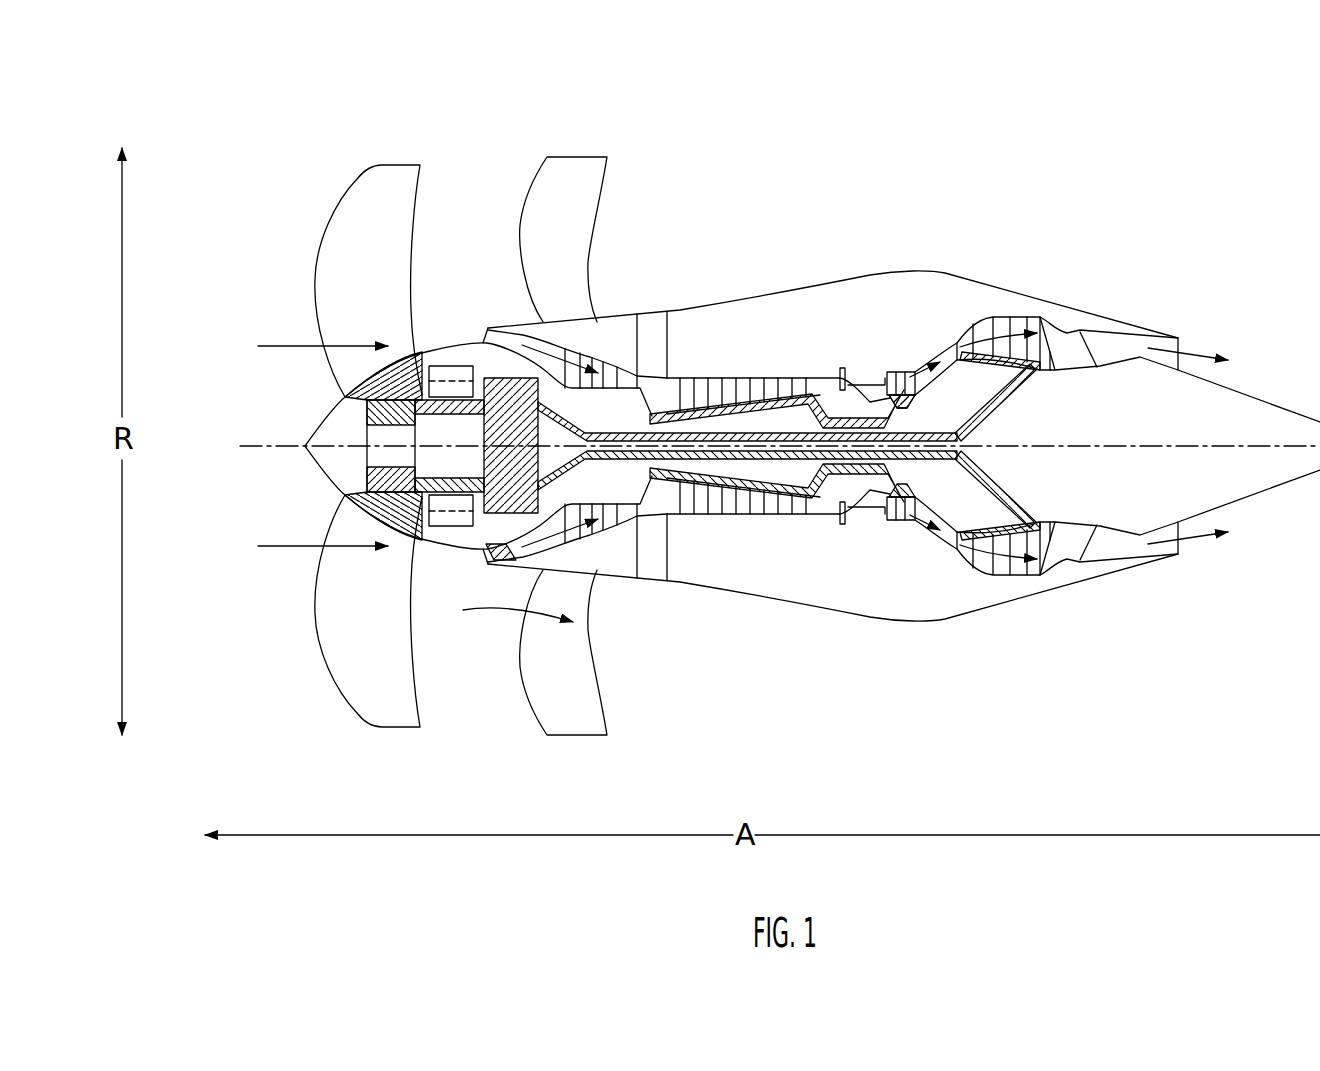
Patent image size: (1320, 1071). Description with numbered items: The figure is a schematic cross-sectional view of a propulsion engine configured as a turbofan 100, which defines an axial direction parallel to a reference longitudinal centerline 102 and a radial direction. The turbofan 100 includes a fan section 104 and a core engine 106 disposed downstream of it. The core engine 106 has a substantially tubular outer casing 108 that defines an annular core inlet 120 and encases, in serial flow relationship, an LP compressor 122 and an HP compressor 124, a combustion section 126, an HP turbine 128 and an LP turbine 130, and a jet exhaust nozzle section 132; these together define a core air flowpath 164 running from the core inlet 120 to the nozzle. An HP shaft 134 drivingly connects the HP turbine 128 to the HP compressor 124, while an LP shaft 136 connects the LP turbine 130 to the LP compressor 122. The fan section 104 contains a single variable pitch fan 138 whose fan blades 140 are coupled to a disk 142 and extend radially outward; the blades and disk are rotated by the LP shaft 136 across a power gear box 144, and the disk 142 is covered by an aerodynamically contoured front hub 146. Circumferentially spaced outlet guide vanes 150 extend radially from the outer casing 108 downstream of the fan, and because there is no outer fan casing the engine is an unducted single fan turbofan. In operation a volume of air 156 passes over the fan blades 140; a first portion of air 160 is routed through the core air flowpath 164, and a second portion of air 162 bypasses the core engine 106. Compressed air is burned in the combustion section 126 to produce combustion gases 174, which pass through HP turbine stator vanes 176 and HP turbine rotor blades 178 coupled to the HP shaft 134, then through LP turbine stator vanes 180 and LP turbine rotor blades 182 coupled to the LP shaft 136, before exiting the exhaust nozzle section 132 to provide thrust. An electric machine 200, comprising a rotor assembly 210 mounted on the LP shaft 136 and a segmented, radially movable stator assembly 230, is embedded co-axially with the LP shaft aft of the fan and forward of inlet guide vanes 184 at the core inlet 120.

The turbofan 100 is at (1100, 196).
The longitudinal centerline 102 is at (1122, 446).
The fan section 104 is at (434, 66).
The core engine 106 is at (805, 280).
The outer casing 108 is at (820, 607).
The annular core inlet 120 is at (482, 557).
The LP compressor 122 is at (591, 531).
The HP compressor 124 is at (707, 508).
The combustion section 126 is at (861, 508).
The HP turbine 128 is at (928, 516).
The LP turbine 130 is at (1038, 570).
The jet exhaust nozzle section 132 is at (1098, 548).
The HP shaft 134 is at (893, 403).
The LP shaft 136 is at (603, 428).
The variable pitch fan 138 is at (278, 302).
The fan blades 140 is at (353, 652).
The disk 142 is at (367, 407).
The power gear box 144 is at (500, 425).
The front hub 146 is at (310, 486).
The outlet guide vanes 150 is at (583, 180).
The volume of air 156 is at (360, 345).
The first portion of air 160 is at (533, 347).
The second portion of air 162 is at (988, 253).
The core air flowpath 164 is at (688, 504).
The combustion gases 174 is at (995, 328).
The HP turbine stator vanes 176 is at (877, 510).
The HP turbine rotor blades 178 is at (903, 498).
The LP turbine stator vanes 180 is at (963, 550).
The LP turbine rotor blades 182 is at (977, 573).
The inlet guide vanes 184 is at (500, 560).
The electric machine 200 is at (448, 368).
The rotor assembly 210 is at (437, 388).
The stator assembly 230 is at (410, 368).